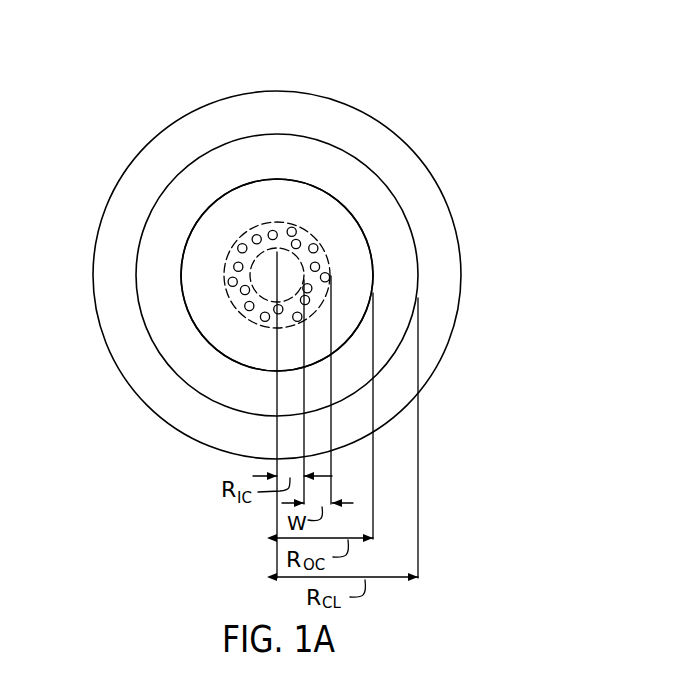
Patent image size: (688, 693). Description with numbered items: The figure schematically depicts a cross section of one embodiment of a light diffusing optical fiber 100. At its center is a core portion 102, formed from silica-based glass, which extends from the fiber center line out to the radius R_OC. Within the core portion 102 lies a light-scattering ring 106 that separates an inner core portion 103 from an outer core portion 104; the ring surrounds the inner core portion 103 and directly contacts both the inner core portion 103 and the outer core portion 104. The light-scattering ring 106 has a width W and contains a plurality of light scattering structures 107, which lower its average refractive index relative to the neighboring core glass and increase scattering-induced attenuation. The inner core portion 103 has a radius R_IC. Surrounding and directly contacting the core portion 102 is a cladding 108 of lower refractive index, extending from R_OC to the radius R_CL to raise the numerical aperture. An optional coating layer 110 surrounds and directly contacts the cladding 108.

The light diffusing optical fiber 100 is at (478, 114).
The core portion 102 is at (393, 264).
The inner core portion 103 is at (257, 224).
The outer core portion 104 is at (180, 268).
The light-scattering ring 106 is at (223, 282).
The light scattering structures 107 is at (318, 248).
The cladding 108 is at (273, 133).
The coating layer 110 is at (149, 143).